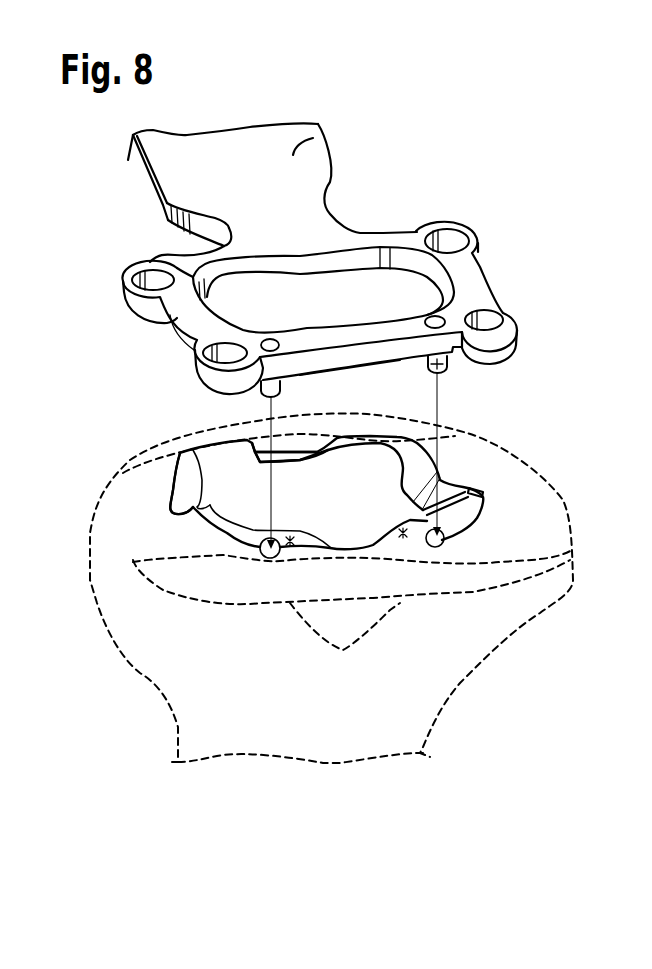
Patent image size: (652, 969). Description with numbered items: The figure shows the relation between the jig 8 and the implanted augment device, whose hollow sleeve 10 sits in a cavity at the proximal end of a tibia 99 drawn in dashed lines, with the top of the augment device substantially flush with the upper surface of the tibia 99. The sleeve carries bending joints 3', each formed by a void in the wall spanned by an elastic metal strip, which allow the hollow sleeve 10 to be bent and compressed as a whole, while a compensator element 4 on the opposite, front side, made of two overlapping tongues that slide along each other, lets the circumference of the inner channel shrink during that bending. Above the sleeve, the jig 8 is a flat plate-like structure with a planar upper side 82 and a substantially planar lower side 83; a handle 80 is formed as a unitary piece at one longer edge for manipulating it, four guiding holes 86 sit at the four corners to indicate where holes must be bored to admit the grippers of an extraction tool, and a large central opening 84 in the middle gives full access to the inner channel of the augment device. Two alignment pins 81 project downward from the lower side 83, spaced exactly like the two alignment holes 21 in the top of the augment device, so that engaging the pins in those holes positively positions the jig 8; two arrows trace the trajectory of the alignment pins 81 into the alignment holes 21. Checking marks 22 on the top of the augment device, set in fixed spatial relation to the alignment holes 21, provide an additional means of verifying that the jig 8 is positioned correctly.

The jig 8 is at (309, 260).
The handle 80 is at (272, 178).
The planar upper side 82 is at (309, 289).
The central opening 84 is at (289, 270).
The guiding holes 86 is at (309, 258).
The alignment pins 81 is at (342, 391).
The lower side 83 is at (357, 387).
The compensator element 4 is at (300, 419).
The hollow sleeve 10 is at (319, 463).
The bending joint 3' is at (332, 466).
The tibia 99 is at (355, 588).
The alignment holes 21 is at (346, 592).
The checking marks 22 is at (339, 600).